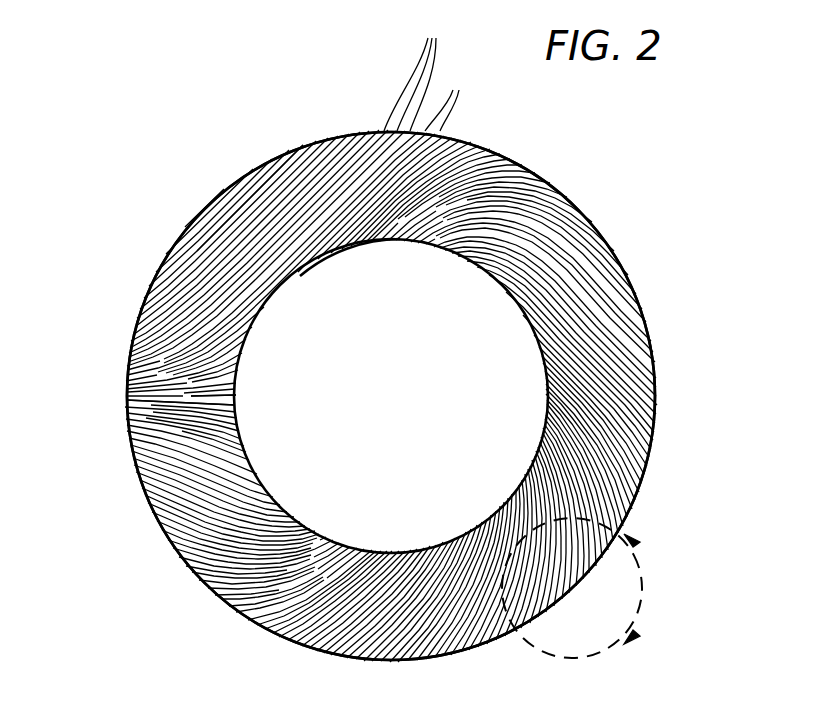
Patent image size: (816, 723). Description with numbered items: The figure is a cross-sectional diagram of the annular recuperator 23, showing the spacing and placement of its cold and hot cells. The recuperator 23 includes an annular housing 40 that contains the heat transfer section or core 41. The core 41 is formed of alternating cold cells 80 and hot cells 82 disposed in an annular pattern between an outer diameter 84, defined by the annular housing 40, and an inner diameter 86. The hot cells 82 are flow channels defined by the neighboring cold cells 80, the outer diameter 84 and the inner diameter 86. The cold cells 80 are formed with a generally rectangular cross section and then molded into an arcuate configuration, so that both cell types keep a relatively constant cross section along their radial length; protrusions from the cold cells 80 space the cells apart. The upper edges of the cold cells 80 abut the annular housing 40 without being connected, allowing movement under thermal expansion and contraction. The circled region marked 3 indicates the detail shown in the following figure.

The recuperator 23 is at (160, 131).
The annular housing 40 is at (621, 242).
The heat transfer section or core 41 is at (178, 325).
The cold cells 80 is at (415, 69).
The hot cells 82 is at (449, 96).
The outer diameter 84 is at (314, 128).
The inner diameter 86 is at (348, 246).
The section view indicator 3 is at (571, 587).